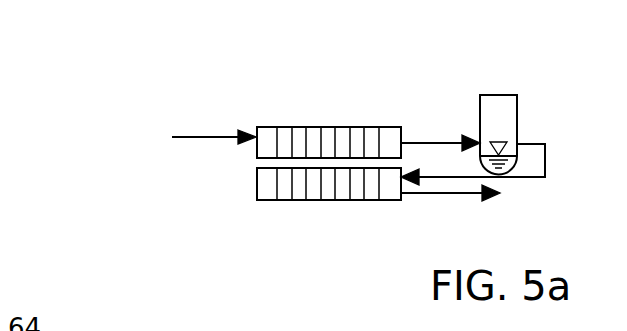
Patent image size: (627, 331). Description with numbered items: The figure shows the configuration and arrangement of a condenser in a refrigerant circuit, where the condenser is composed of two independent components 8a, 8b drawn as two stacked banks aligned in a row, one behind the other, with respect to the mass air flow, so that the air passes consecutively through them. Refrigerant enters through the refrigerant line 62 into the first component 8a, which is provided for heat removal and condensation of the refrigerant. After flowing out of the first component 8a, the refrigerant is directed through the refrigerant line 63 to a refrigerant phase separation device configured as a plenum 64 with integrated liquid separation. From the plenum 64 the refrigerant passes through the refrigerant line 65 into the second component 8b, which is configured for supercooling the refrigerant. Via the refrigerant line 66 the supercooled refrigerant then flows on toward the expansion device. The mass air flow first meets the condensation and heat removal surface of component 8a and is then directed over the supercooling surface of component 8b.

The refrigerant line 62 is at (203, 135).
The first component 8a is at (313, 140).
The second component 8b is at (315, 183).
The refrigerant line 63 is at (433, 142).
The plenum 64 is at (498, 95).
The refrigerant line 65 is at (542, 143).
The refrigerant line 66 is at (430, 194).